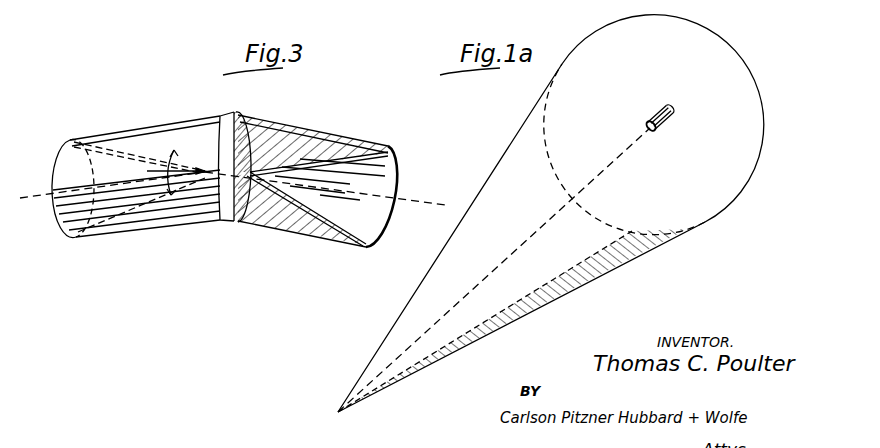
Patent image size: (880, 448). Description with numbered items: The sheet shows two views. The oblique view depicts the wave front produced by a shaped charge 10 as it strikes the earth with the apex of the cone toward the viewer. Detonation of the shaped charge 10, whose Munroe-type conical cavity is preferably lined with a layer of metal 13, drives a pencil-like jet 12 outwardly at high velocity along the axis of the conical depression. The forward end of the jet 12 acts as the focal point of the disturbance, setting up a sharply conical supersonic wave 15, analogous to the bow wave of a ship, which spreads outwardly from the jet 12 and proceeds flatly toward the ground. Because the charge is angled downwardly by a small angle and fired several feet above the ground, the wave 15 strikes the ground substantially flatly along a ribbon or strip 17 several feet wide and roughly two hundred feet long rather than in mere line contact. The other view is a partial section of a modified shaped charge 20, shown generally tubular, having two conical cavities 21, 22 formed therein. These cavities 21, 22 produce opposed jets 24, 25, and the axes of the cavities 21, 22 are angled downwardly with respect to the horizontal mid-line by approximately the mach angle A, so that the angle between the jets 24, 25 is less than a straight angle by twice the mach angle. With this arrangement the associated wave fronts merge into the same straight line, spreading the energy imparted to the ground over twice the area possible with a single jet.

In FIG. 1A, the shaped charge 10 is at (677, 80).
In FIG. 1A, the jet 12 is at (606, 166).
In FIG. 3, the metal lining 13 is at (333, 150).
In FIG. 1A, the supersonic wave 15 is at (407, 303).
In FIG. 1A, the ribbon or strip 17 is at (556, 290).
In FIG. 3, the modified shaped charge 20 is at (160, 123).
In FIG. 3, the conical cavity 21 is at (68, 245).
In FIG. 3, the conical cavity 22 is at (398, 162).
In FIG. 3, the jet 24 is at (38, 172).
In FIG. 3, the jet 25 is at (410, 200).